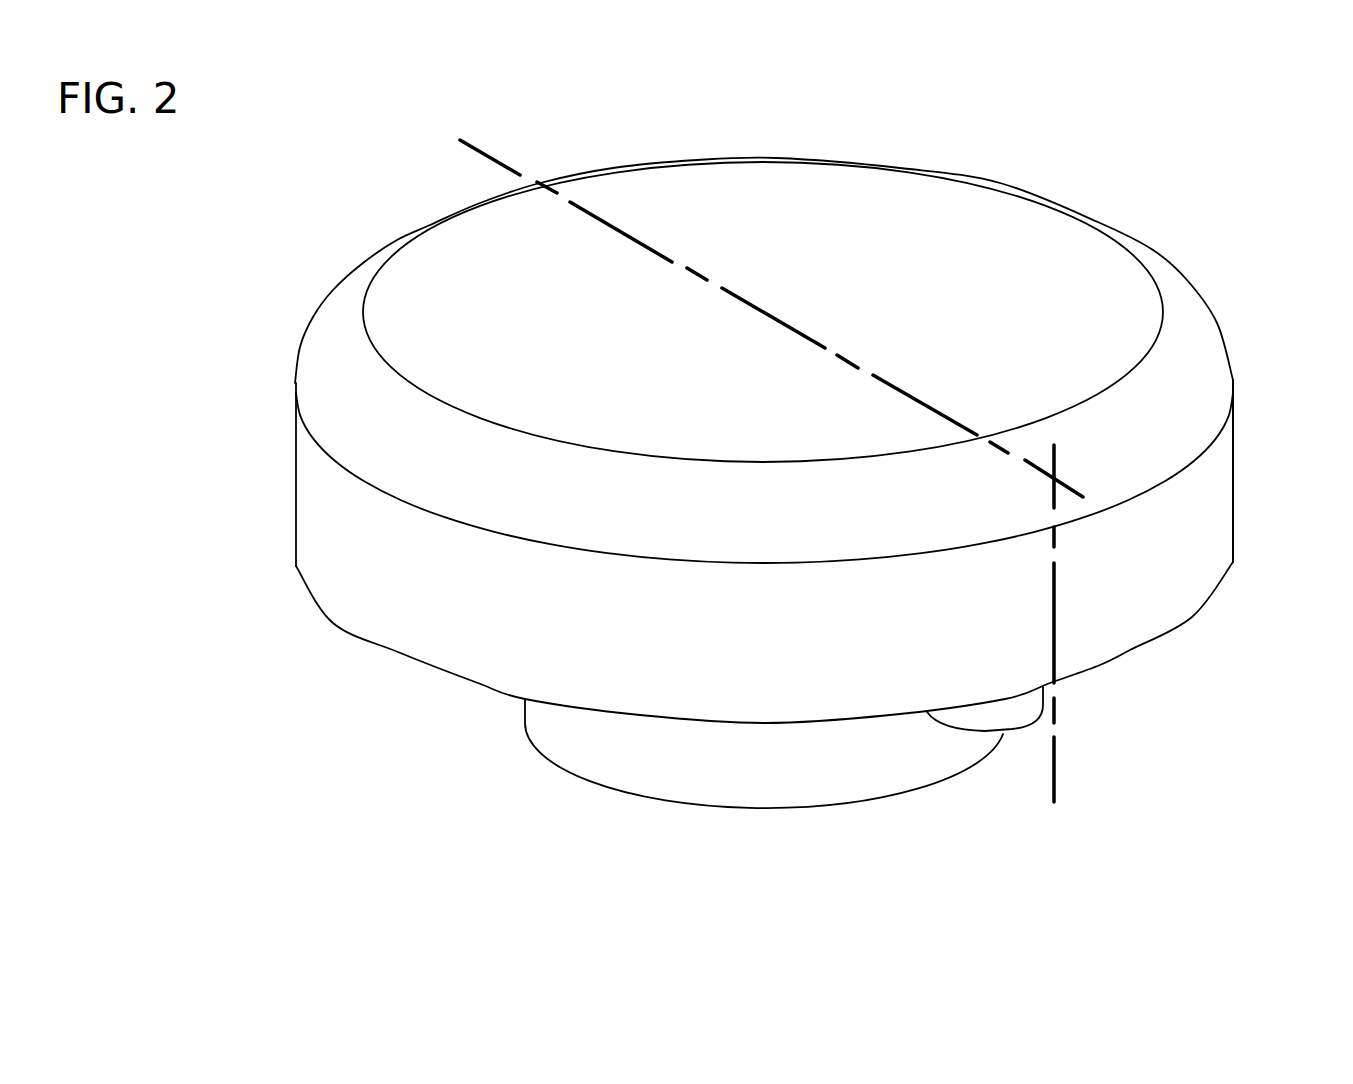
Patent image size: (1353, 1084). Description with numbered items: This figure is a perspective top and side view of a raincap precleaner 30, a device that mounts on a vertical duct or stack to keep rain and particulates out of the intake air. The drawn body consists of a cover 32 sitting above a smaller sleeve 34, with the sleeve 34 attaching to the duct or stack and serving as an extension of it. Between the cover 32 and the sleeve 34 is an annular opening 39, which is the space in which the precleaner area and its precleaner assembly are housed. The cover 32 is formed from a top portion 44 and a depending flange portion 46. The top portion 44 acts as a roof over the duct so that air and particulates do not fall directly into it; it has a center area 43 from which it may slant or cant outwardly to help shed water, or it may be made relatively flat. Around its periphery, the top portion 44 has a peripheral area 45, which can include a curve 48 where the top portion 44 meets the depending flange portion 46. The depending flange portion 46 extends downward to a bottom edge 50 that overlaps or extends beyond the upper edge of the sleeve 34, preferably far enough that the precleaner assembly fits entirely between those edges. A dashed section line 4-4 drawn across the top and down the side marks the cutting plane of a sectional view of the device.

The raincap precleaner 30 is at (1131, 151).
The cover 32 is at (1195, 322).
The sleeve 34 is at (757, 787).
The annular opening 39 is at (437, 744).
The center area 43 is at (825, 322).
The top portion 44 is at (803, 200).
The peripheral area 45 is at (1163, 378).
The depending flange portion 46 is at (1198, 567).
The curve 48 is at (1157, 427).
The bottom edge 50 is at (1192, 617).
The section line 4- 4 is at (468, 169).